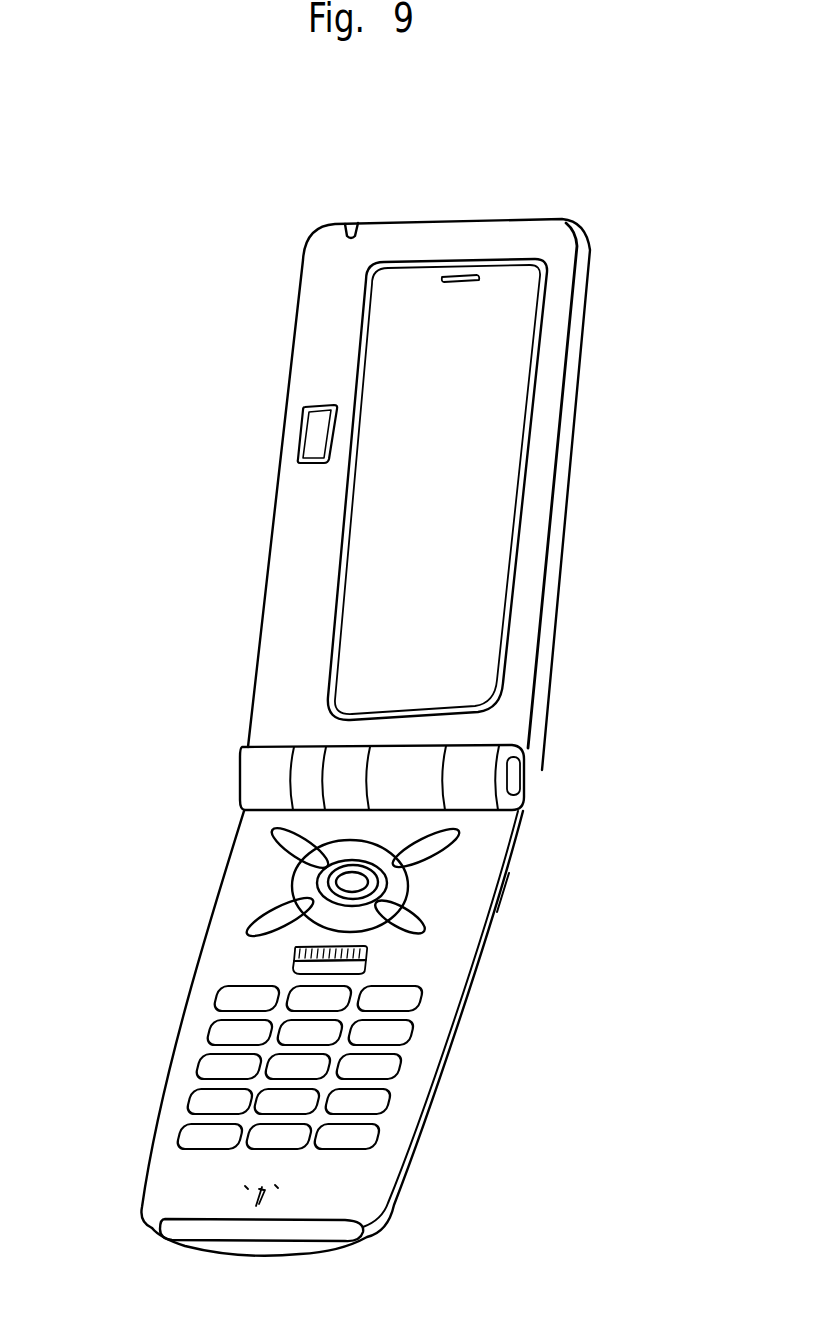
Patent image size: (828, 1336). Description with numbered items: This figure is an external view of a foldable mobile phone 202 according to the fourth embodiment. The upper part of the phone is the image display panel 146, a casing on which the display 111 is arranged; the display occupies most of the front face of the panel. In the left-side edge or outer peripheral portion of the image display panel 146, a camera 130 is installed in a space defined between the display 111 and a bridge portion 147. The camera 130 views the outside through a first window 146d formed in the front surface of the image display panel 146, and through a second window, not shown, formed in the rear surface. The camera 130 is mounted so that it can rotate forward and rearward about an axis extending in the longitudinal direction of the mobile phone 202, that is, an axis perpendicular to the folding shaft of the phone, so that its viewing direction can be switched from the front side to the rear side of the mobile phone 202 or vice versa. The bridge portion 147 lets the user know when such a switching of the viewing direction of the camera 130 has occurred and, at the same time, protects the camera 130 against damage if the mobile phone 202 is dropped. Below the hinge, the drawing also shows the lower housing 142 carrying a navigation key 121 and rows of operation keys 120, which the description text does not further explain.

The mobile phone 202 is at (536, 163).
The image display panel 146 is at (588, 350).
The first window 146d is at (313, 462).
The bridge portion 147 is at (293, 434).
The camera 130 is at (307, 413).
The display 111 is at (507, 477).
The lower housing 142 is at (200, 953).
The navigation key 121 is at (420, 932).
The operation keys 120 is at (390, 1027).